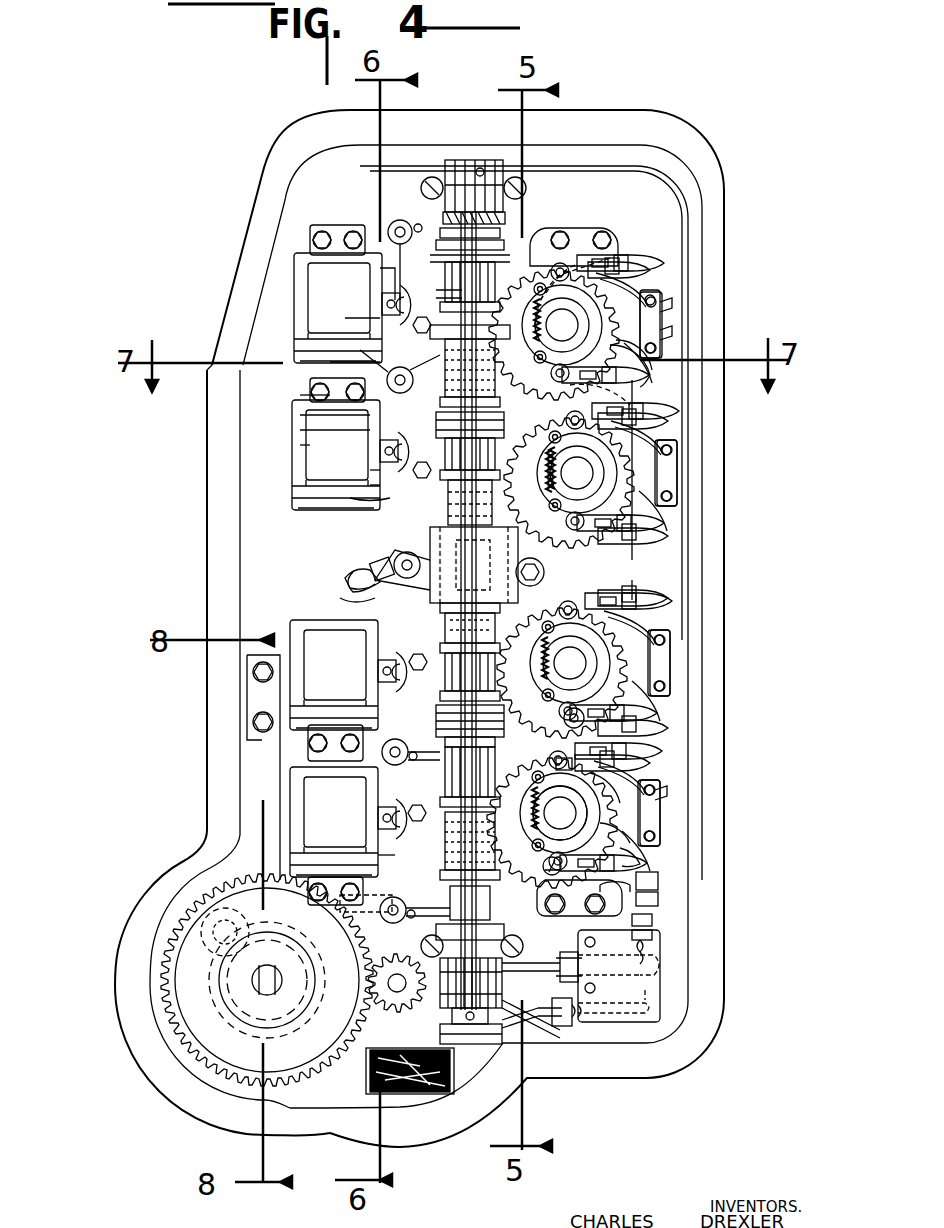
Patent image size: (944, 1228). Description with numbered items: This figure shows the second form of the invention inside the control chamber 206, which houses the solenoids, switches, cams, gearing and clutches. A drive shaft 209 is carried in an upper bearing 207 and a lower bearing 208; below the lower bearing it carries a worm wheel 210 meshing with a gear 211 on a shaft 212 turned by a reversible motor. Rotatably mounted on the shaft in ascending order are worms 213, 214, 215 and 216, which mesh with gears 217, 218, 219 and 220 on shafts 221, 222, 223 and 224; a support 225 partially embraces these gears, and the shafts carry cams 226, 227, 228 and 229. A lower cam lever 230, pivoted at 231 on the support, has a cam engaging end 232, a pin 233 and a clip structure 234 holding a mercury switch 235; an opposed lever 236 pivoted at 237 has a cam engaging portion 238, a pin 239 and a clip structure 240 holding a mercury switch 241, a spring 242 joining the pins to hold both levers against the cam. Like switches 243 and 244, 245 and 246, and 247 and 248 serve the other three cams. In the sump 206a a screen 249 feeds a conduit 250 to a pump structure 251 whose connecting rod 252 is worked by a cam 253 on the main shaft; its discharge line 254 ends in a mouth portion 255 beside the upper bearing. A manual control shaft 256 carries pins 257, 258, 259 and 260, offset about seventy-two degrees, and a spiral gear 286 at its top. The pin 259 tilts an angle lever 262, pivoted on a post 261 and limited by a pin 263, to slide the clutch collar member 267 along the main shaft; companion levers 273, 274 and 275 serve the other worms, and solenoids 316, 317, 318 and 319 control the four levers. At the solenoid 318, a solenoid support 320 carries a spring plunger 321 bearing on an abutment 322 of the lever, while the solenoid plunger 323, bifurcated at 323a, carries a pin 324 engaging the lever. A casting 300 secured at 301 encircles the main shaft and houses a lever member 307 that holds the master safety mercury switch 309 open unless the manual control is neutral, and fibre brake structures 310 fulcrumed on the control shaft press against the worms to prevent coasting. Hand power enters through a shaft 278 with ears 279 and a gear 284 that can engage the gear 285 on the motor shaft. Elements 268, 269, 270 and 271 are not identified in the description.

The control chamber 206 is at (633, 157).
The sump 206a is at (350, 1097).
The upper bearing 207 is at (447, 172).
The lower bearing 208 is at (428, 946).
The drive shaft 209 is at (467, 1046).
The worm wheel 210 is at (470, 1035).
The gear 211 is at (360, 990).
The shaft 212 is at (397, 992).
The worm 213 is at (440, 848).
The worm 214 is at (440, 632).
The worm 215 is at (448, 505).
The worm 216 is at (442, 292).
The gear 217 is at (655, 852).
The gear 218 is at (660, 716).
The gear 219 is at (650, 490).
The gear 220 is at (565, 262).
The shaft 221 is at (574, 815).
The shaft 222 is at (584, 665).
The shaft 223 is at (591, 475).
The shaft 224 is at (576, 327).
The support 225 is at (612, 235).
The cam 226 is at (662, 818).
The cam 227 is at (598, 655).
The cam 228 is at (679, 443).
The cam 229 is at (660, 322).
The lower cam lever 230 is at (660, 900).
The pivot 231 is at (652, 920).
The lever end 232 is at (579, 912).
The pin 233 is at (545, 870).
The clip structure 234 is at (640, 888).
The mercury switch 235 is at (660, 880).
The lever 236 is at (536, 735).
The pivot 237 is at (600, 786).
The cam engaging portion 238 is at (667, 798).
The pin 239 is at (540, 760).
The clip structure 240 is at (572, 765).
The mercury switch 241 is at (650, 752).
The spring 242 is at (560, 813).
The mercury switch 243 is at (668, 728).
The mercury switch 244 is at (668, 599).
The mercury switch 245 is at (668, 536).
The mercury switch 246 is at (668, 424).
The mercury switch 247 is at (645, 380).
The mercury switch 248 is at (655, 266).
The screen 249 is at (397, 1094).
The conduit 250 is at (545, 1030).
The pump structure 251 is at (643, 1022).
The connecting rod 252 is at (552, 972).
The cam 253 is at (450, 1008).
The discharge line 254 is at (625, 830).
The mouth portion 255 is at (505, 160).
The shaft 256 is at (475, 275).
The pin 257 is at (395, 912).
The pin 258 is at (440, 765).
The pin 259 is at (445, 408).
The pin 260 is at (520, 228).
The post 261 is at (330, 362).
The angle lever 262 is at (300, 445).
The pin 263 is at (430, 365).
The clutch collar member 267 is at (345, 318).
The pivot 268 is at (320, 387).
The gear hub 269 is at (450, 430).
The gear segment 270 is at (600, 405).
The ratchet teeth 271 is at (535, 471).
The lever 273 is at (390, 852).
The lever 274 is at (390, 700).
The lever 275 is at (385, 292).
The shaft 278 is at (268, 996).
The ears 279 is at (262, 990).
The gear 284 is at (250, 990).
The gear 285 is at (372, 1058).
The spiral gear 286 is at (512, 215).
The casting 300 is at (430, 545).
The securing point 301 is at (545, 572).
The lever member 307 is at (375, 596).
The mercury switch 309 is at (345, 580).
The brake structure 310 is at (424, 690).
The solenoid 316 is at (358, 836).
The solenoid 317 is at (358, 690).
The solenoid 318 is at (361, 444).
The solenoid 319 is at (362, 294).
The solenoid support 320 is at (330, 415).
The spring plunger 321 is at (340, 430).
The abutment 322 is at (300, 395).
The solenoid plunger 323 is at (370, 470).
The bifurcated end 323a is at (363, 489).
The pin 324 is at (370, 485).